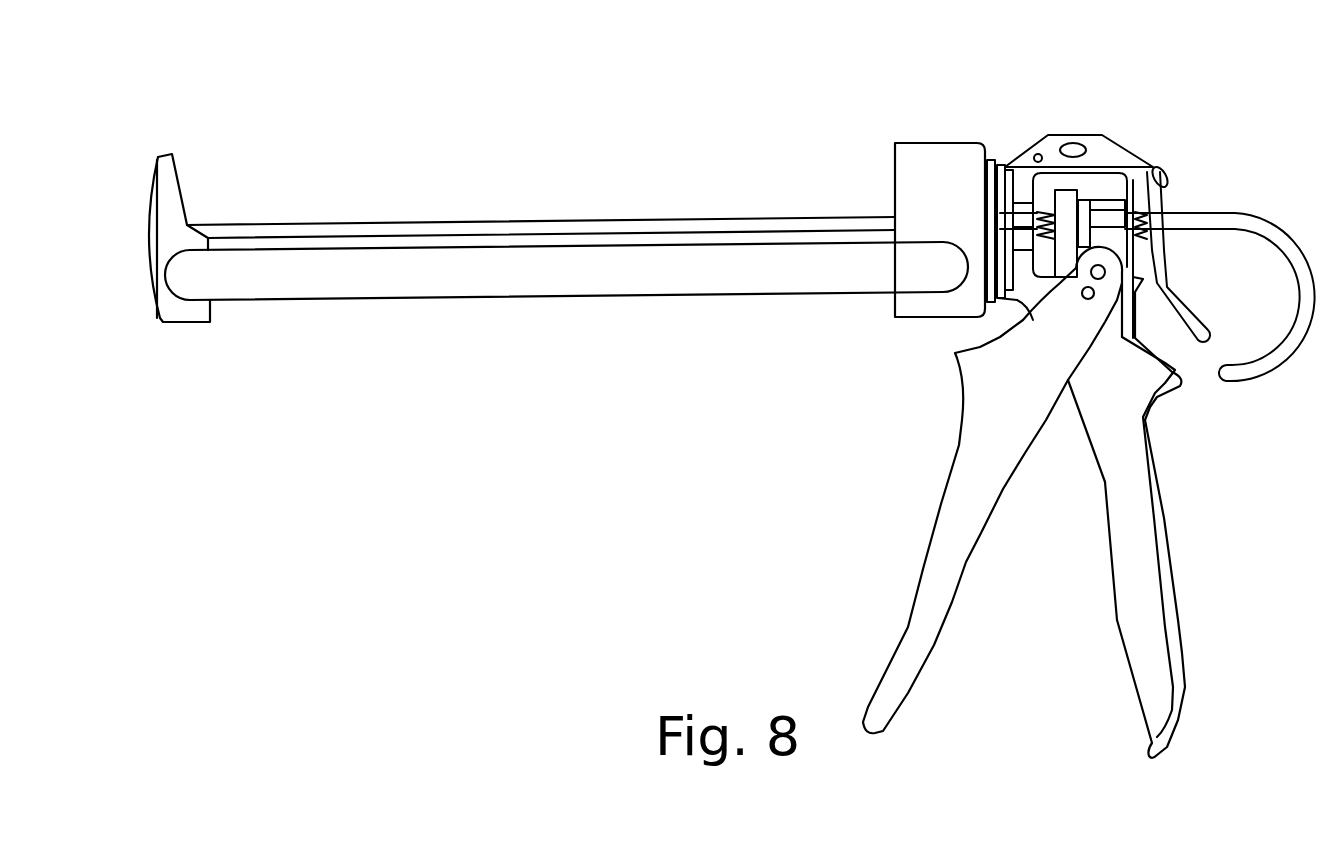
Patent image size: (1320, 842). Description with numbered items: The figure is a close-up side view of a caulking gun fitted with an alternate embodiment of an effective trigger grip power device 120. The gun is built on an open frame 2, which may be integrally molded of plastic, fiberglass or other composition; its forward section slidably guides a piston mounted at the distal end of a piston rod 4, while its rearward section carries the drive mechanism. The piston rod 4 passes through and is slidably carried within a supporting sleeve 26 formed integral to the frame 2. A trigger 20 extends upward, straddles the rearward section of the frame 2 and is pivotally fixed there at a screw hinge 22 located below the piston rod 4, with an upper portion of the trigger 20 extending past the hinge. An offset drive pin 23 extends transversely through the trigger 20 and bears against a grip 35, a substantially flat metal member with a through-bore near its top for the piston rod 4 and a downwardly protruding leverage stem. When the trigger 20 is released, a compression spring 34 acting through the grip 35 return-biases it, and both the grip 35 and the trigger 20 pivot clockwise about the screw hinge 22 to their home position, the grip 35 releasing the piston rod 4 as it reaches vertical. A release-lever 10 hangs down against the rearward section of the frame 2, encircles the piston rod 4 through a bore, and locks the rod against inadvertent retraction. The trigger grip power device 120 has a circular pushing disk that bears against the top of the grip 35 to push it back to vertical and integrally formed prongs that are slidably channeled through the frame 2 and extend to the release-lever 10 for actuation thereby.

The open frame 2 is at (1115, 138).
The piston rod 4 is at (1233, 212).
The release-lever 10 is at (1197, 313).
The trigger 20 is at (981, 533).
The screw hinge 22 is at (1092, 298).
The offset drive pin 23 is at (1105, 278).
The supporting sleeve 26 is at (1010, 293).
The compression spring 34 is at (1040, 203).
The grip 35 is at (1055, 192).
The effective trigger grip power device 120 is at (1098, 198).